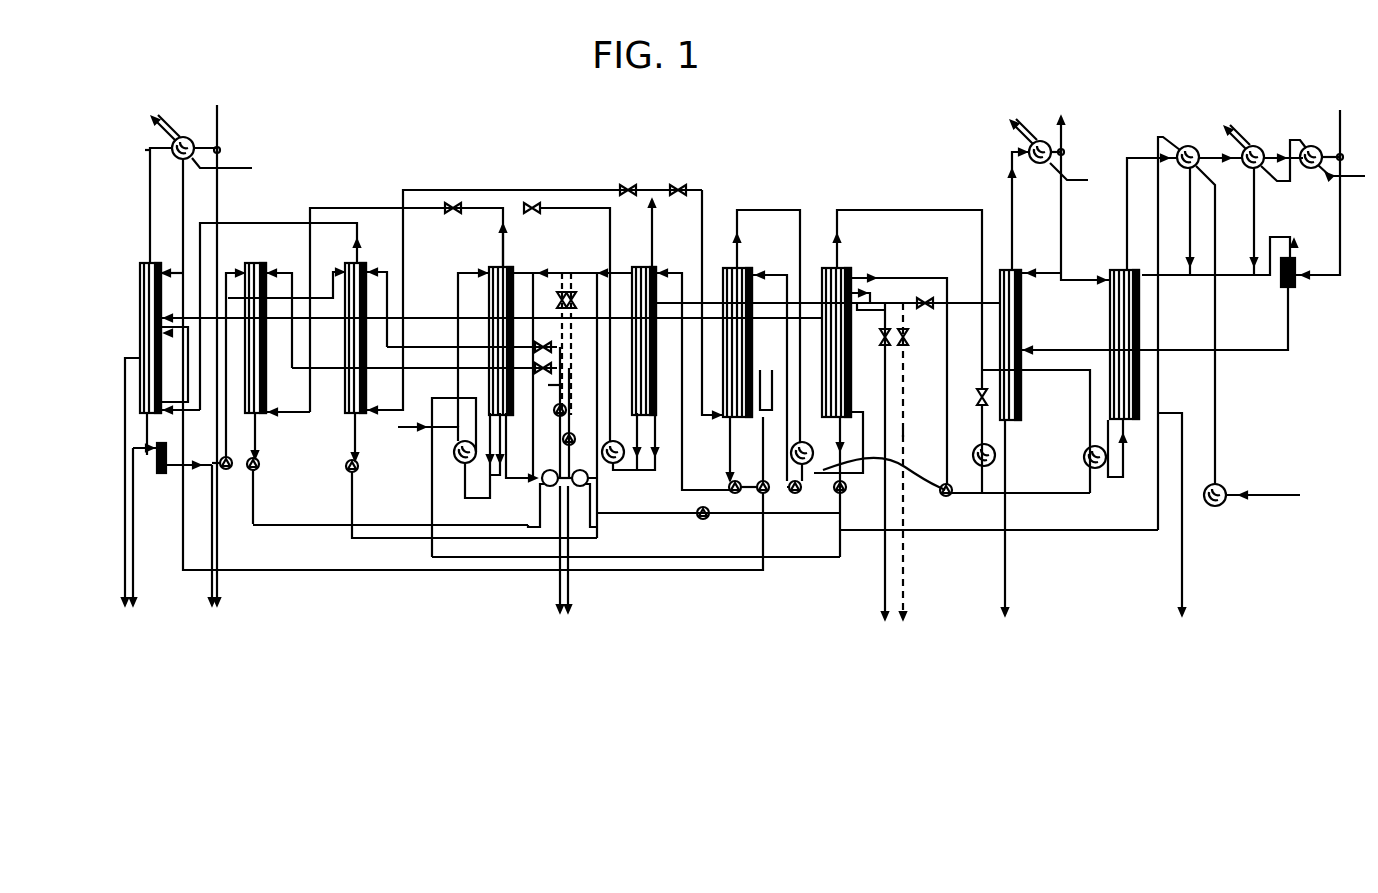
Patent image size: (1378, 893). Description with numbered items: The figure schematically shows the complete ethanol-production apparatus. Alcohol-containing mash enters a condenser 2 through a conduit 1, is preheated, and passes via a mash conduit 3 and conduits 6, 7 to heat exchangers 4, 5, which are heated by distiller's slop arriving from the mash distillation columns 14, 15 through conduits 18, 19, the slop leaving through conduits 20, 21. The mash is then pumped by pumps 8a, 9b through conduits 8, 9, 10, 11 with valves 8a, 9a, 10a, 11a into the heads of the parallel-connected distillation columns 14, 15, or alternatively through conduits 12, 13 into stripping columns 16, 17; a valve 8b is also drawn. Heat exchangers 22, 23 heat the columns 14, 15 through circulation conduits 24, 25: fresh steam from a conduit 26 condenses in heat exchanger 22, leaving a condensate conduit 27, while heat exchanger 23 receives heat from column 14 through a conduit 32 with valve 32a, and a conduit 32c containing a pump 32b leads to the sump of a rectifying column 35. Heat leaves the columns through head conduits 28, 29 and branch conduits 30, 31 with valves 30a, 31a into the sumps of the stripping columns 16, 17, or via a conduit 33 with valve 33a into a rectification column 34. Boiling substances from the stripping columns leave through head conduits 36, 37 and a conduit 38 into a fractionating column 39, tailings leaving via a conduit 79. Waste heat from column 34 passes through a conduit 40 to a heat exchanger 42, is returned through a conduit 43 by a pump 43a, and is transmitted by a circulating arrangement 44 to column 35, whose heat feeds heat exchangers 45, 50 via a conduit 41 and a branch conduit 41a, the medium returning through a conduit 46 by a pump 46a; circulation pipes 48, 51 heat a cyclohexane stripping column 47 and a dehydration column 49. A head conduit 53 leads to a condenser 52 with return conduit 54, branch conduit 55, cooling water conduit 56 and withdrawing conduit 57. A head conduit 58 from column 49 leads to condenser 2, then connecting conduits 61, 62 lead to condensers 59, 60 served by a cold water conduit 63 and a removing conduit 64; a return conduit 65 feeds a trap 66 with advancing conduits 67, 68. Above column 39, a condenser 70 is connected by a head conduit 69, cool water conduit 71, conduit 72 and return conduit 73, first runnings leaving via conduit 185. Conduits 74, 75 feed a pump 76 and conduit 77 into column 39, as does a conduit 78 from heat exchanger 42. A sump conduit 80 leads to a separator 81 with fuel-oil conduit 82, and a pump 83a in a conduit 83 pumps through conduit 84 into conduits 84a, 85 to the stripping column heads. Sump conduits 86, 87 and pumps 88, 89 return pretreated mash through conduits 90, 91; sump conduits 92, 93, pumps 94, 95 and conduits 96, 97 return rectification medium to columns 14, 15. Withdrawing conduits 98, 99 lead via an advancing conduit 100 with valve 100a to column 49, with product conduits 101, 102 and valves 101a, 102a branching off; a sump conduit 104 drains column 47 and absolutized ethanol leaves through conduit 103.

The conduit 1 is at (1216, 421).
The condenser 2 is at (1182, 144).
The mash conduit 3 is at (1158, 339).
The heat exchanger 4 is at (541, 472).
The heat exchanger 5 is at (581, 472).
The conduit 6 is at (542, 505).
The conduit 7 is at (585, 505).
The conduit 8 is at (566, 395).
The pump/valve 8a is at (547, 393).
The valve 8b is at (556, 415).
The conduit 9 is at (559, 347).
The valve 9a is at (557, 368).
The pump 9b is at (572, 438).
The conduit 10 is at (537, 270).
The valve 10a is at (562, 275).
The conduit 11 is at (576, 300).
The valve 11a is at (574, 275).
The conduit 12 is at (426, 369).
The conduit 13 is at (440, 347).
The mash distillation column 14 is at (494, 300).
The mash distillation column 15 is at (638, 341).
The stripping column 16 is at (264, 374).
The stripping column 17 is at (347, 384).
The conduit 18 is at (516, 481).
The conduit 19 is at (616, 525).
The conduit 20 is at (554, 592).
The conduit 21 is at (572, 580).
The heat exchanger 22 is at (469, 440).
The heat exchanger 23 is at (618, 469).
The circulation conduit 24 is at (486, 498).
The circulation conduit 25 is at (646, 473).
The conduit 26 is at (418, 431).
The condensate conduit 27 is at (469, 503).
The head conduit 28 is at (504, 233).
The head conduit 29 is at (658, 209).
The branch conduit 30 is at (408, 226).
The valve 30a is at (458, 213).
The branch conduit 31 is at (479, 189).
The valve 31a is at (625, 185).
The conduit 32 is at (615, 241).
The valve 32a is at (540, 215).
The pump 32b is at (706, 520).
The conduit 32c is at (680, 561).
The conduit 33 is at (701, 235).
The valve 33a is at (680, 185).
The rectification column 34 is at (736, 281).
The rectifying column 35 is at (834, 261).
The head conduit 36 is at (273, 227).
The head conduit 37 is at (355, 261).
The conduit 38 is at (200, 281).
The fractionating column 39 is at (140, 320).
The conduit 40 is at (784, 212).
The conduit 41 is at (919, 211).
The branch conduit 41a is at (1060, 373).
The heat exchanger 42 is at (791, 455).
The conduit 43 is at (778, 274).
The pump 43a is at (798, 493).
The circulating arrangement 44 is at (884, 467).
The heat exchanger 45 is at (977, 453).
The conduit 46 is at (973, 399).
The pump 46a is at (944, 497).
The cyclohexane stripping column 47 is at (1004, 273).
The circulation pipe 48 is at (1000, 495).
The dehydration column 49 is at (1114, 329).
The heat exchanger 50 is at (1087, 453).
The circulation pipe 51 is at (1119, 485).
The condenser 52 is at (1042, 167).
The head conduit 53 is at (1011, 181).
The return conduit 54 is at (1036, 273).
The branch conduit 55 is at (1088, 279).
The cooling water conduit 56 is at (1074, 177).
The withdrawing conduit 57 is at (1020, 133).
The head conduit 58 is at (1126, 225).
The condenser 59 is at (1246, 176).
The condenser 60 is at (1314, 146).
The connecting conduit 61 is at (1218, 152).
The connecting conduit 62 is at (1284, 146).
The cold water conduit 63 is at (1348, 183).
The removing conduit 64 is at (1239, 130).
The return conduit 65 is at (1338, 233).
The trap 66 is at (1298, 269).
The advancing conduit 67 is at (1252, 275).
The advancing conduit 68 is at (1264, 348).
The head conduit 69 is at (145, 150).
The condenser 70 is at (176, 158).
The cool water conduit 71 is at (250, 170).
The conduit 72 is at (170, 120).
The return conduit 73 is at (183, 226).
The conduit 74 is at (762, 415).
The conduit 75 is at (762, 369).
The pump 76 is at (756, 493).
The conduit 77 is at (410, 572).
The conduit 78 is at (438, 318).
The conduit 79 is at (122, 359).
The sump conduit 80 is at (150, 424).
The separator 81 is at (162, 474).
The conduit 82 is at (174, 576).
The conduit 83 is at (207, 462).
The pump 83a is at (226, 470).
The conduit 84 is at (227, 412).
The conduit 84a is at (225, 269).
The conduit 85 is at (287, 273).
The sump conduit 86 is at (266, 444).
The sump conduit 87 is at (352, 446).
The pump 88 is at (258, 469).
The pump 89 is at (358, 472).
The conduit 90 is at (308, 524).
The conduit 91 is at (352, 540).
The sump conduit 92 is at (726, 439).
The sump conduit 93 is at (864, 414).
The pump 94 is at (730, 483).
The pump 95 is at (841, 528).
The conduit 96 is at (682, 490).
The conduit 97 is at (451, 277).
The withdrawing conduit 98 is at (866, 308).
The withdrawing conduit 99 is at (854, 288).
The advancing conduit 100 is at (956, 300).
The valve 100a is at (920, 282).
The product conduit 101 is at (885, 353).
The valve 101a is at (902, 293).
The product conduit 102 is at (919, 435).
The valve 102a is at (904, 343).
The conduit 103 is at (1180, 581).
The sump conduit 104 is at (1010, 525).
The conduit 185 is at (212, 530).